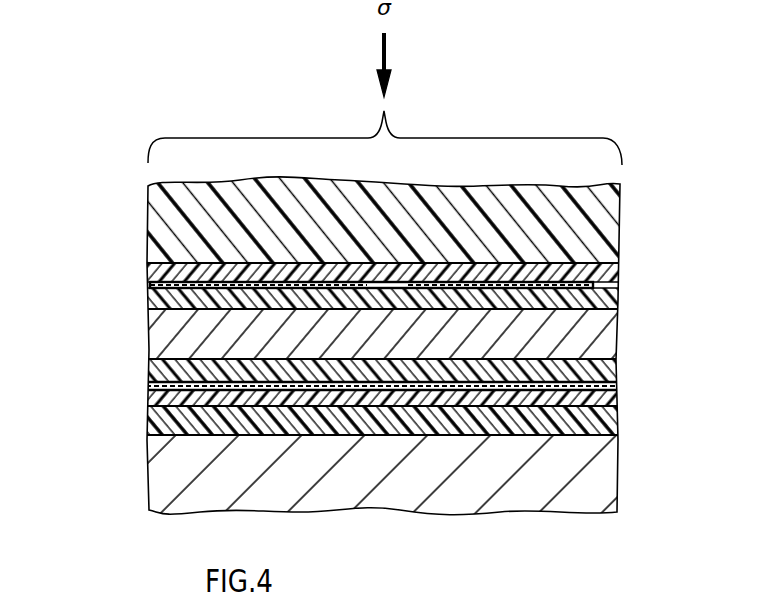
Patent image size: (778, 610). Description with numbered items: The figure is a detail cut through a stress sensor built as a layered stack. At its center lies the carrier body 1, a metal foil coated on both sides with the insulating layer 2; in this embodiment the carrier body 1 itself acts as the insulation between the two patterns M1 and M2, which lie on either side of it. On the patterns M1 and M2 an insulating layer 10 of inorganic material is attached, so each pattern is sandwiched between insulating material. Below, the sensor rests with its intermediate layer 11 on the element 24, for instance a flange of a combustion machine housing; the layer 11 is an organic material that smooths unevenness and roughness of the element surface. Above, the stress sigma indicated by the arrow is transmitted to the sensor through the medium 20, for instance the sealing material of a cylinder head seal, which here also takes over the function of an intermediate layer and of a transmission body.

The carrier body 1 is at (590, 337).
The insulating layer 2 is at (612, 293).
The insulating layer 10 is at (612, 270).
The intermediate layer 11 is at (610, 428).
The medium 20 is at (588, 225).
The element 24 is at (580, 487).
The pattern M1 is at (148, 383).
The pattern M2 is at (148, 284).